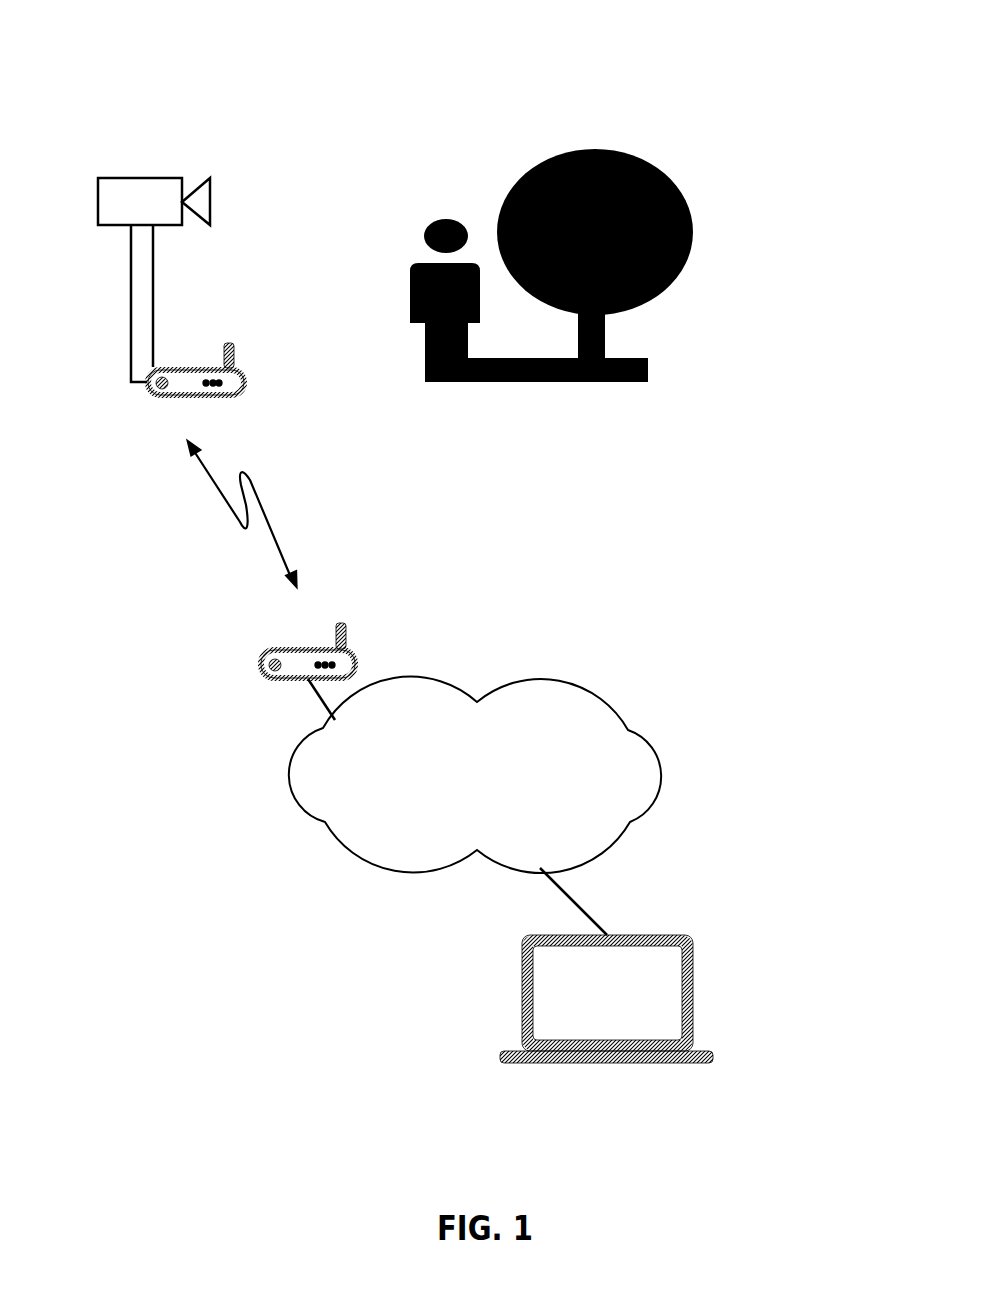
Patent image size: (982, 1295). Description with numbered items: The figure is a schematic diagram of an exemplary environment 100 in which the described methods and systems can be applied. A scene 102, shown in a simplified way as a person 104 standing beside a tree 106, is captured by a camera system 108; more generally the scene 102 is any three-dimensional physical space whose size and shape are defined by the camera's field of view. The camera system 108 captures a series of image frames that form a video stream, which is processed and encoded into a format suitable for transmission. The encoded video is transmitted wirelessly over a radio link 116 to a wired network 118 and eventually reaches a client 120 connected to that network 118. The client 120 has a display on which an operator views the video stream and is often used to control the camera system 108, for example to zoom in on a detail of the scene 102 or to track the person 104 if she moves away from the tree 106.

The environment 100 is at (72, 33).
The scene 102 is at (737, 128).
The person 104 is at (413, 266).
The tree 106 is at (678, 273).
The camera system 108 is at (140, 178).
The radio link 116 is at (168, 580).
The network 118 is at (545, 788).
The client 120 is at (718, 973).